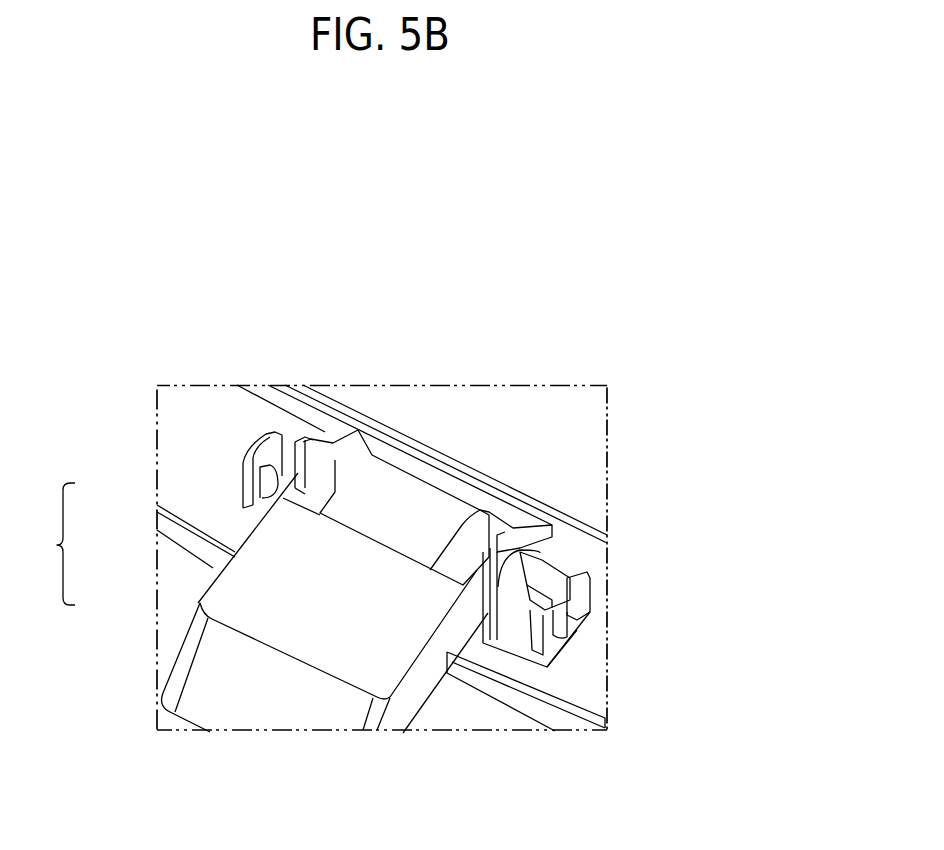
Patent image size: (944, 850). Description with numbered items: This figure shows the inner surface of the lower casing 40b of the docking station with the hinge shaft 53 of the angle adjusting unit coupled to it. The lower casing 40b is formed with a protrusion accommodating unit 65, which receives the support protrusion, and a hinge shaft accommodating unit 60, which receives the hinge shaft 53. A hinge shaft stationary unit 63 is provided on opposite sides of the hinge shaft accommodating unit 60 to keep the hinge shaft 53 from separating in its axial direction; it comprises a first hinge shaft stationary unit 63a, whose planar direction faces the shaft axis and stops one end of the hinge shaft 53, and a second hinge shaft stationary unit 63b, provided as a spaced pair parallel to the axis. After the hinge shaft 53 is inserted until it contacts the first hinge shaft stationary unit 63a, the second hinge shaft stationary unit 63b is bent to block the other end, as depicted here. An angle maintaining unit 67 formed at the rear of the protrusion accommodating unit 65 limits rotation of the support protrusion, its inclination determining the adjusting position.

The lower casing 40b is at (478, 715).
The hinge shaft 53 is at (313, 490).
The hinge shaft accommodating unit 60 is at (540, 533).
The hinge shaft stationary unit 63 is at (52, 544).
The first hinge shaft stationary unit 63a is at (243, 486).
The second hinge shaft stationary unit 63b is at (503, 617).
The protrusion accommodating unit 65 is at (323, 665).
The angle maintaining unit 67 is at (418, 470).